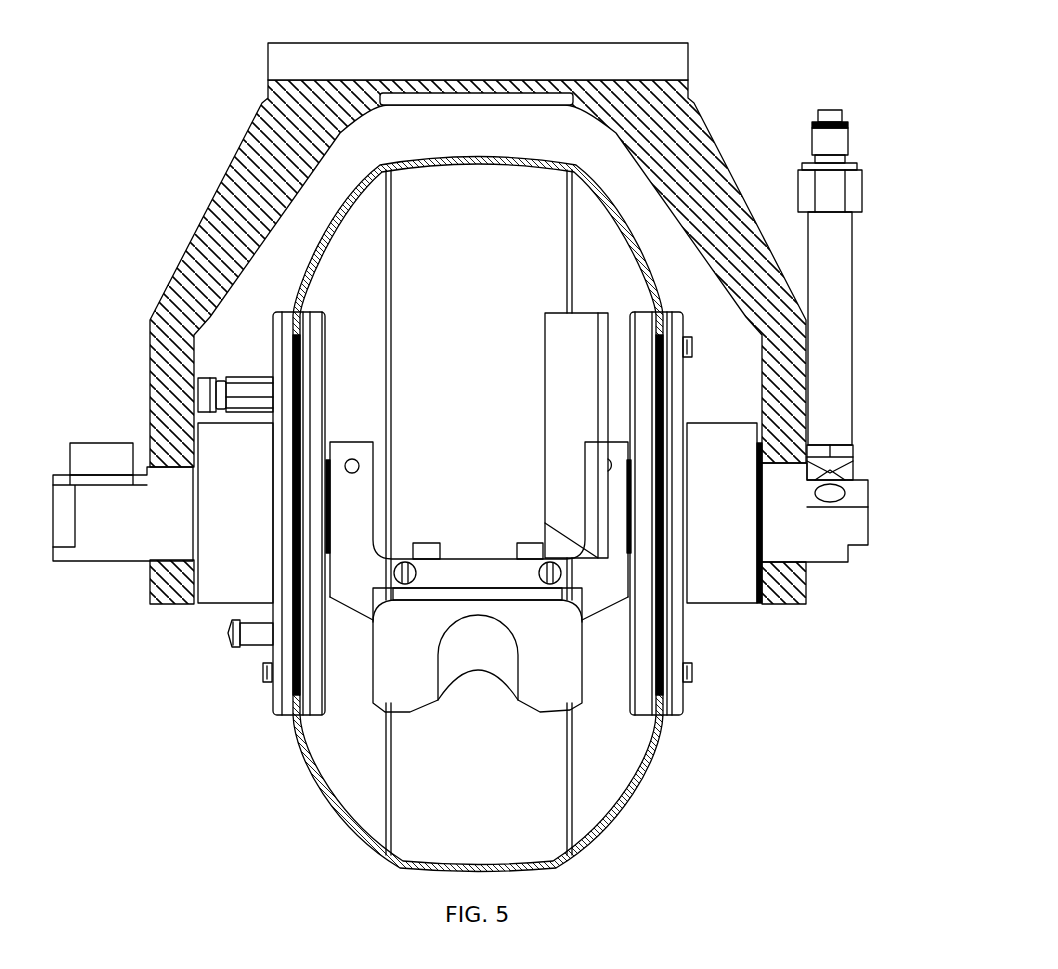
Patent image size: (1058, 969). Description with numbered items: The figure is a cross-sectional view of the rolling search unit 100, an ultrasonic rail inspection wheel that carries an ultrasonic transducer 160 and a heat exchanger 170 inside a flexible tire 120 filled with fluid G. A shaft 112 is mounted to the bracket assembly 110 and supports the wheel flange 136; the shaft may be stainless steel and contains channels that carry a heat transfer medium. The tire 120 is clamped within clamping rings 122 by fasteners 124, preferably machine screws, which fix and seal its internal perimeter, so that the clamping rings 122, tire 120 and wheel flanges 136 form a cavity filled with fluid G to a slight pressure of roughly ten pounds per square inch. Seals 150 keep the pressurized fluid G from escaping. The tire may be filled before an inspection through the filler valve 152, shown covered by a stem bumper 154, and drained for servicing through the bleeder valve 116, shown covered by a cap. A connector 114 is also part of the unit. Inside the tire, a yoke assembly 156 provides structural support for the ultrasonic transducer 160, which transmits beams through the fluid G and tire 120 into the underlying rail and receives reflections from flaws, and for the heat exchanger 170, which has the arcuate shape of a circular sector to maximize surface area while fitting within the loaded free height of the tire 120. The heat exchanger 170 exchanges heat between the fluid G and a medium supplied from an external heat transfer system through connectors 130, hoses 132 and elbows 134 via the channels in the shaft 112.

The rolling search unit 100 is at (199, 75).
The bracket assembly 110 is at (598, 43).
The shaft 112 is at (850, 555).
The connector 114 is at (93, 443).
The bleeder valve 116 is at (230, 636).
The tire 120 is at (472, 156).
The clamping ring 122 is at (662, 314).
The fasteners 124 is at (693, 346).
The connectors 130 is at (817, 116).
The hoses 132 is at (853, 272).
The elbows 134 is at (855, 458).
The wheel flange 136 is at (707, 422).
The seals 150 is at (332, 566).
The filler valve 152 is at (250, 376).
The stem bumper 154 is at (200, 375).
The yoke assembly 156 is at (373, 460).
The ultrasonic transducer 160 is at (578, 710).
The heat exchanger 170 is at (560, 313).
The fluid G is at (587, 820).